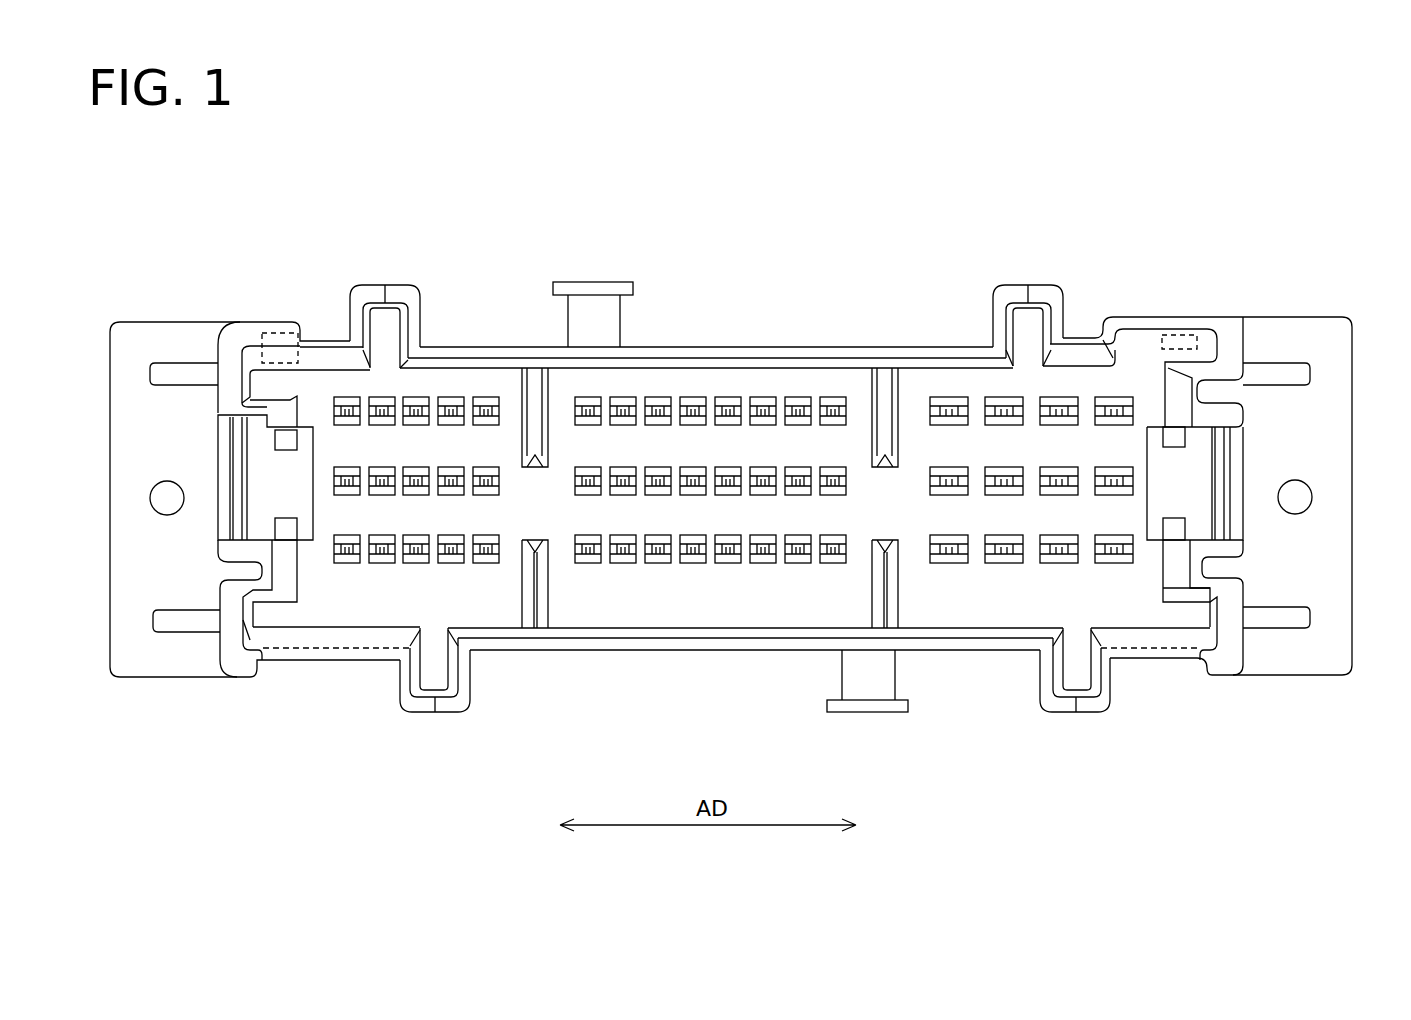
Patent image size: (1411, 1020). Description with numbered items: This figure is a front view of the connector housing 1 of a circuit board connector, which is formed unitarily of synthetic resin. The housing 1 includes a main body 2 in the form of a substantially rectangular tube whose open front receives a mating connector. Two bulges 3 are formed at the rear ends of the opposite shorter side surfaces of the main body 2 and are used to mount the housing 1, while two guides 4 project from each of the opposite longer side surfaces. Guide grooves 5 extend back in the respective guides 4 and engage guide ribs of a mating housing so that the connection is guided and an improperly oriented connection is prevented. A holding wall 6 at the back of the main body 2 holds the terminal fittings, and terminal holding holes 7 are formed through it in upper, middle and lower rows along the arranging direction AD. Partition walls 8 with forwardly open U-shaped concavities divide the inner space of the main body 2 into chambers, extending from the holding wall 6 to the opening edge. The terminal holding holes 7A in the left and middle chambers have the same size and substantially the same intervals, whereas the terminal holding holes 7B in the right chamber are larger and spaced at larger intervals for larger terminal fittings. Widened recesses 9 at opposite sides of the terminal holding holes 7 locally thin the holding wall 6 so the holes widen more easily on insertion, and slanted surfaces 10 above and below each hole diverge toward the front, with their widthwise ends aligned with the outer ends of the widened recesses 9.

The housing 1 is at (1198, 270).
The main body 2 is at (819, 350).
The bulge 3 is at (122, 436).
The guide 4 is at (392, 286).
The guide groove 5 is at (394, 326).
The holding wall 6 is at (693, 605).
The terminal holding hole 7 is at (740, 408).
The terminal holding hole 7A is at (382, 548).
The terminal holding hole 7B is at (1004, 548).
The partition wall 8 is at (547, 585).
The widened recess 9 is at (684, 418).
The slanted surface 10 is at (958, 406).